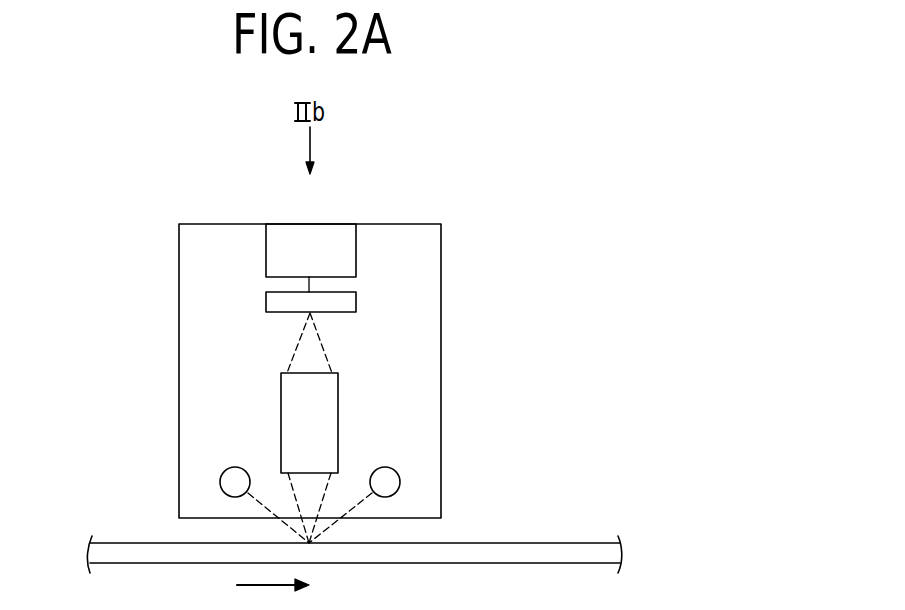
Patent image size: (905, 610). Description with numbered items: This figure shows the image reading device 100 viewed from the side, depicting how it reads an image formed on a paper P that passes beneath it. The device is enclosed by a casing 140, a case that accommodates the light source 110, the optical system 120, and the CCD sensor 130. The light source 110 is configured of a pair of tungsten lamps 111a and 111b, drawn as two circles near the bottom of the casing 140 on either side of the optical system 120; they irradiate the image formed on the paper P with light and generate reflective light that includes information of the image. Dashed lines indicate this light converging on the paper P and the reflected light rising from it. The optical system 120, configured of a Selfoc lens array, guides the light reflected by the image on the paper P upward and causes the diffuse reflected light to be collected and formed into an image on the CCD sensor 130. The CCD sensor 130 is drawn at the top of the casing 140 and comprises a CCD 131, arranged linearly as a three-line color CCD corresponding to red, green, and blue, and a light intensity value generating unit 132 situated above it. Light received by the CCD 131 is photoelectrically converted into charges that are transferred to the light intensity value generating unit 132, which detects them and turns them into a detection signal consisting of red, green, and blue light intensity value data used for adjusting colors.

The image reading device 100 is at (462, 193).
The light source 110 is at (222, 440).
The tungsten lamp 111a is at (220, 481).
The tungsten lamp 111b is at (400, 480).
The optical system 120 is at (338, 410).
The CCD sensor 130 is at (503, 247).
The CCD 131 is at (356, 302).
The light intensity value generating unit 132 is at (356, 252).
The casing 140 is at (441, 358).
The paper P is at (117, 540).